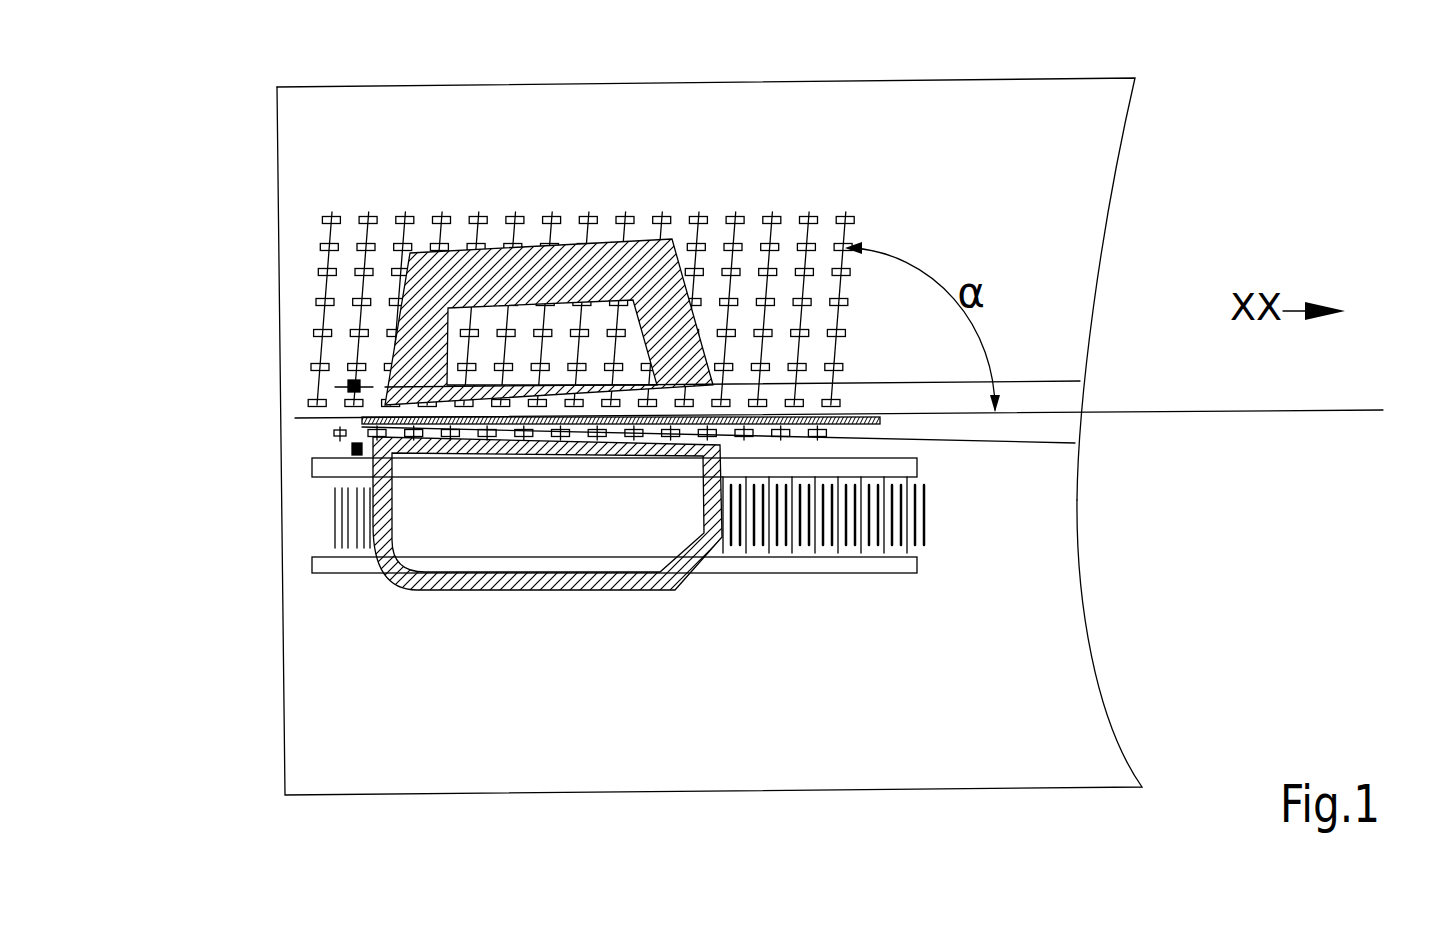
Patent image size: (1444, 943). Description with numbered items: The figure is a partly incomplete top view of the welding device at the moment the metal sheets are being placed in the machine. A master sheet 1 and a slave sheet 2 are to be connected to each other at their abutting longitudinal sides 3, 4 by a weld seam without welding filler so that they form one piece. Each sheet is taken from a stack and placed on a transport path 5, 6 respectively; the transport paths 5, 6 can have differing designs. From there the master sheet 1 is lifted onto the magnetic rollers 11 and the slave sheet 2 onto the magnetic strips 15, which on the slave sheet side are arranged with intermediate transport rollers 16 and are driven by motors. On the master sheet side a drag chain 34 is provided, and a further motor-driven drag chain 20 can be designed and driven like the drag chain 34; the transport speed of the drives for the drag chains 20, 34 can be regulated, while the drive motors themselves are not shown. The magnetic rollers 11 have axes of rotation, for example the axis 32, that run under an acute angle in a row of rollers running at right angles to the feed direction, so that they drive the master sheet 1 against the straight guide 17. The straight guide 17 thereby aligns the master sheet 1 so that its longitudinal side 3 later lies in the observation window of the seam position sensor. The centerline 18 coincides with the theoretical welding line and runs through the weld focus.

The master sheet 1 is at (603, 270).
The slave sheet 2 is at (587, 540).
The longitudinal side 3 is at (668, 387).
The longitudinal side 4 is at (650, 457).
The transport path 5 is at (1058, 252).
The transport path 6 is at (1055, 640).
The magnetic rollers 11 is at (608, 261).
The magnetic strips 15 is at (330, 470).
The transport rollers 16 is at (750, 473).
The straight guide 17 is at (880, 423).
The centerline 18 is at (1368, 408).
The drag chain 20 is at (348, 452).
The axis of rotation 32 is at (845, 200).
The drag chain 34 is at (350, 387).